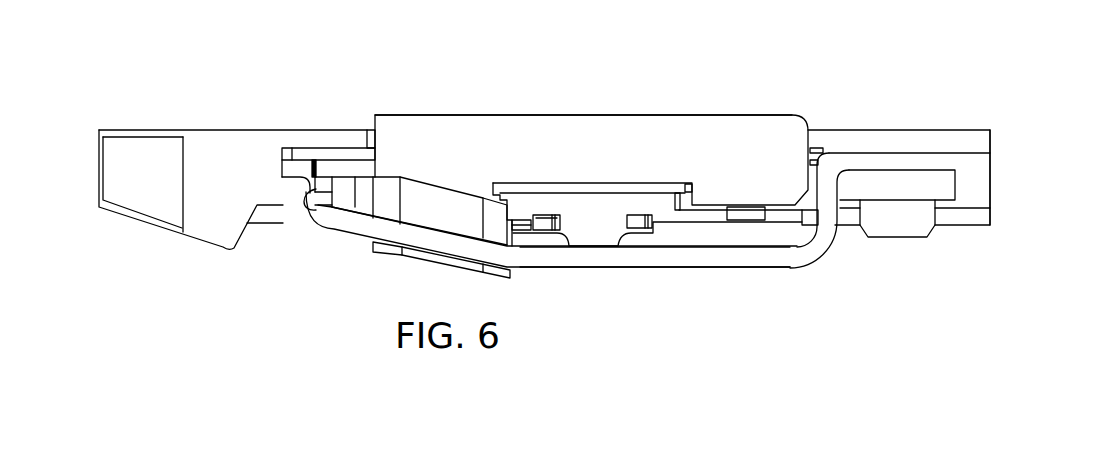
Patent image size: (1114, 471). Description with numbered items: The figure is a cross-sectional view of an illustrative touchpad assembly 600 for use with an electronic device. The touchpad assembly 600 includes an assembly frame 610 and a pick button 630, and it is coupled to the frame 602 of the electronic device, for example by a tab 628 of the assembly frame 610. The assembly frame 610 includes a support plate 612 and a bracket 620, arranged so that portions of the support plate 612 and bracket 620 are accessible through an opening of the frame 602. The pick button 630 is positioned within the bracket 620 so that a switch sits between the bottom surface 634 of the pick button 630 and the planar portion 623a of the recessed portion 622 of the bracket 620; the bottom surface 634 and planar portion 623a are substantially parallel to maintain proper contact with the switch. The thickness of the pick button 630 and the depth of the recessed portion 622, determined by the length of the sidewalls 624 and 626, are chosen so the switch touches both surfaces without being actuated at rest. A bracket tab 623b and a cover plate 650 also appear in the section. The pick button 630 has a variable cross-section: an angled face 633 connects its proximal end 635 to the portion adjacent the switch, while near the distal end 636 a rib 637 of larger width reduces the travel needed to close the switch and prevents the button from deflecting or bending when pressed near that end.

The touchpad assembly 600 is at (690, 84).
The frame 602 is at (200, 130).
The assembly frame 610 is at (996, 141).
The support plate 612 is at (898, 163).
The bracket 620 is at (630, 274).
The recessed portion 622 is at (805, 237).
The planar portion 623a is at (592, 258).
The bracket tab 623b is at (448, 243).
The sidewall 624 is at (832, 213).
The sidewall 626 is at (313, 190).
The tab 628 is at (290, 168).
The pick button 630 is at (415, 122).
The angled face 633 is at (420, 180).
The bottom surface 634 is at (683, 205).
The proximal end 635 is at (373, 115).
The distal end 636 is at (808, 130).
The rib 637 is at (752, 217).
The cover plate 650 is at (320, 143).